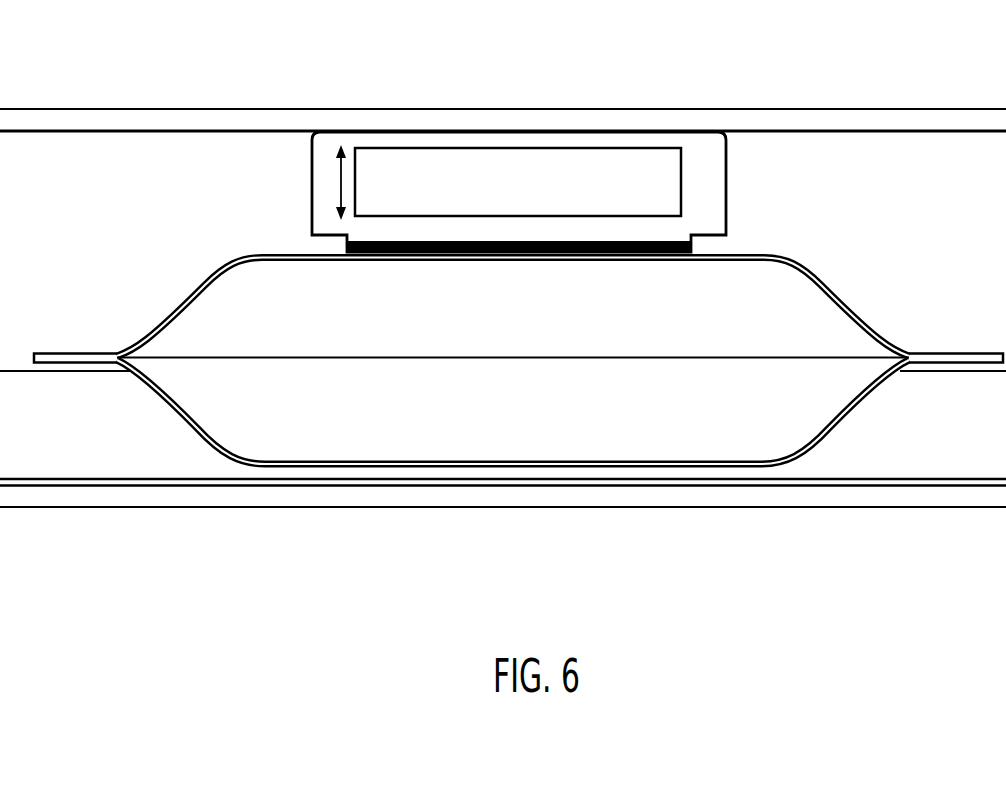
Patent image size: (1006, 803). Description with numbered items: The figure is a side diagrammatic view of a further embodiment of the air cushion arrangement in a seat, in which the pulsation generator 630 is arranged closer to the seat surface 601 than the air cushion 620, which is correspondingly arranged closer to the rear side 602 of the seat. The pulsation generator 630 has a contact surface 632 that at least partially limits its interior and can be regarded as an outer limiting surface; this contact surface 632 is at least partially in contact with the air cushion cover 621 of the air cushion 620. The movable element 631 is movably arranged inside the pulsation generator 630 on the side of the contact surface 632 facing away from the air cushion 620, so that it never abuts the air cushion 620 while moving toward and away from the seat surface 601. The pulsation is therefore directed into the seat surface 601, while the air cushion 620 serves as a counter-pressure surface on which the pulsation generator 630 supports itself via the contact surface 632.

The seat surface 601 is at (78, 119).
The rear side of the seat 602 is at (110, 514).
The air cushion 620 is at (518, 407).
The air cushion cover 621 is at (860, 305).
The pulsation generator 630 is at (550, 151).
The movable element 631 is at (590, 158).
The contact surface 632 is at (660, 241).